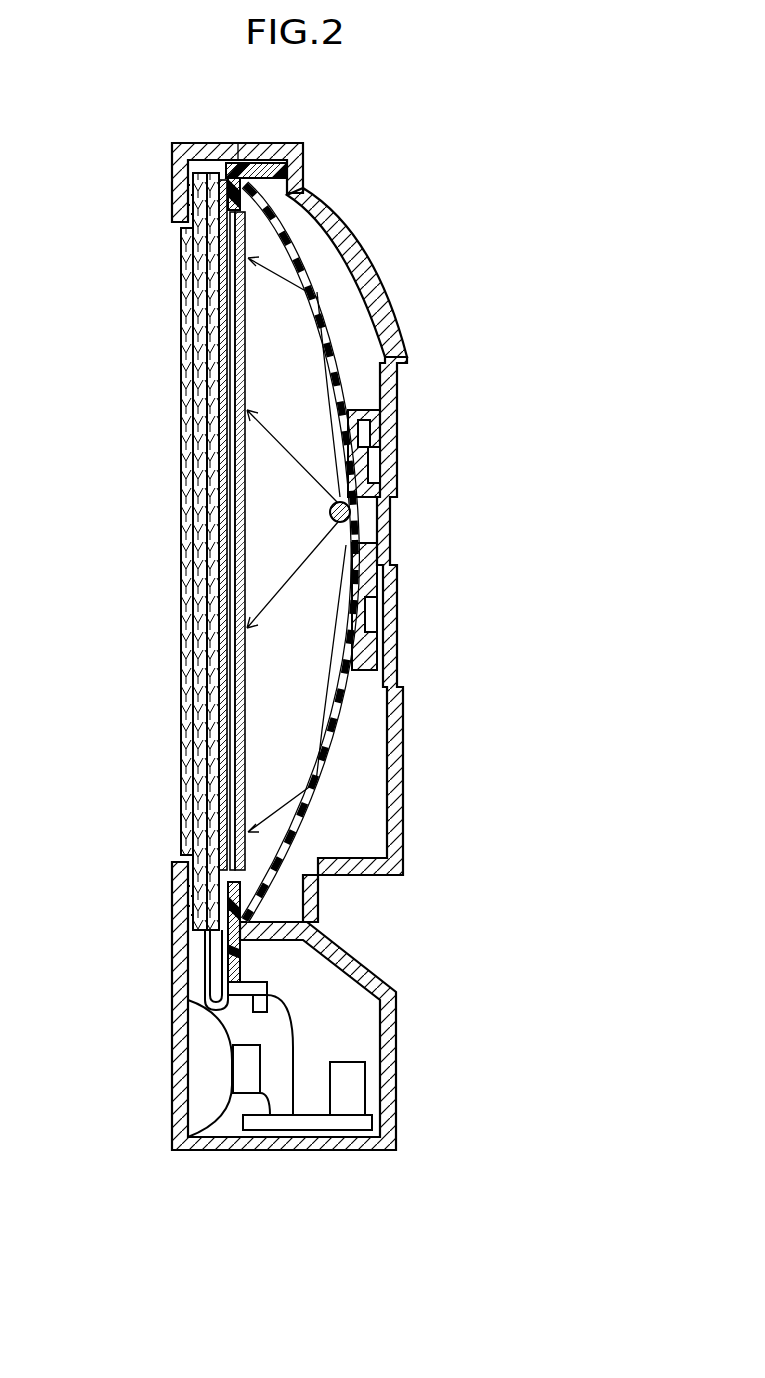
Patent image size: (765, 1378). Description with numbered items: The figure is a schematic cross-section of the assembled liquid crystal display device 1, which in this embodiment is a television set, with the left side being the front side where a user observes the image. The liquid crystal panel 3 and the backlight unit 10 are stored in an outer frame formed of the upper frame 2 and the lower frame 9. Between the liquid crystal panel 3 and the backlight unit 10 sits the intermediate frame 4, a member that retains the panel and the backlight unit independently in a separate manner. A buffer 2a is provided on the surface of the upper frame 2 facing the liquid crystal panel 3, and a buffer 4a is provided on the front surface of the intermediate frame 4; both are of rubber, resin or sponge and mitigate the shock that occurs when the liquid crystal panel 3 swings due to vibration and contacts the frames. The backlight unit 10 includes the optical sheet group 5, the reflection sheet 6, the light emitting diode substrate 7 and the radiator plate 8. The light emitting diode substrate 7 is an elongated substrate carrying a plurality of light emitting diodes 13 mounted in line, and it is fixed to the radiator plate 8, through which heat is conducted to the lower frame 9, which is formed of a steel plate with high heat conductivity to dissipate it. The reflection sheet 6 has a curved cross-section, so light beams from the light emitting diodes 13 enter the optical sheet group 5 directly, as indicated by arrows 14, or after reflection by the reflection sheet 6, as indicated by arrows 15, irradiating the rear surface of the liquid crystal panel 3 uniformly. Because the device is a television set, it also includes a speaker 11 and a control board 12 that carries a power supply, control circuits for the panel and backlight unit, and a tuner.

The liquid crystal display device 1 is at (174, 1282).
The upper frame 2 is at (172, 177).
The buffer 2a is at (188, 210).
The liquid crystal panel 3 is at (181, 712).
The intermediate frame 4 is at (258, 164).
The buffer 4a is at (223, 173).
The optical sheet group 5 is at (248, 295).
The reflection sheet 6 is at (333, 335).
The light emitting diode substrate 7 is at (365, 502).
The radiator plate 8 is at (370, 430).
The lower frame 9 is at (331, 217).
The backlight unit 10 is at (422, 550).
The speaker 11 is at (218, 1125).
The control board 12 is at (338, 1130).
The light emitting diodes 13 is at (352, 522).
The arrows 14 is at (310, 556).
The arrows 15 is at (322, 348).